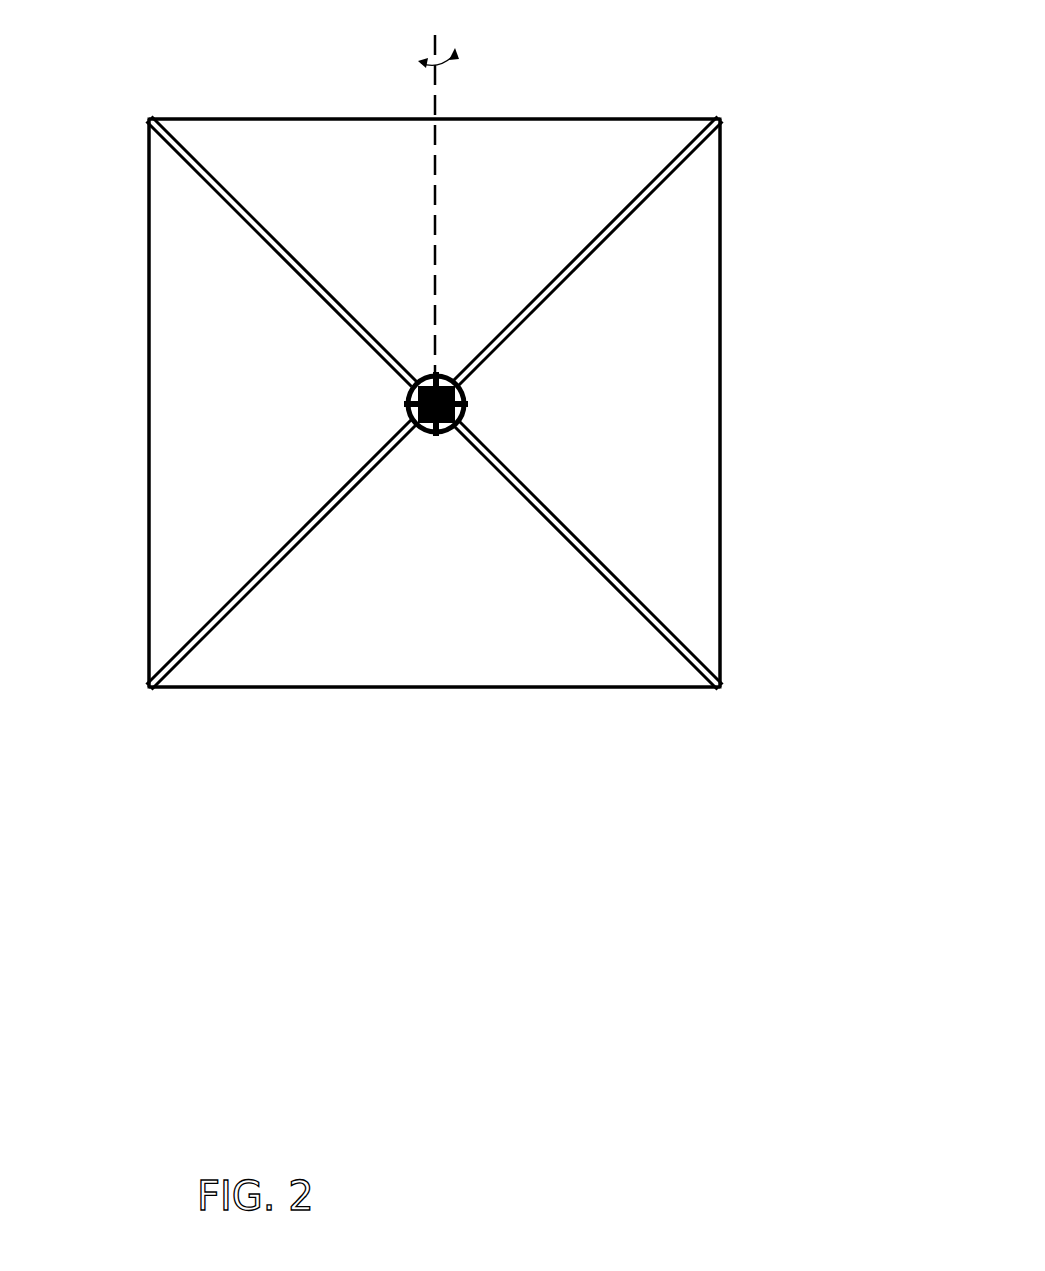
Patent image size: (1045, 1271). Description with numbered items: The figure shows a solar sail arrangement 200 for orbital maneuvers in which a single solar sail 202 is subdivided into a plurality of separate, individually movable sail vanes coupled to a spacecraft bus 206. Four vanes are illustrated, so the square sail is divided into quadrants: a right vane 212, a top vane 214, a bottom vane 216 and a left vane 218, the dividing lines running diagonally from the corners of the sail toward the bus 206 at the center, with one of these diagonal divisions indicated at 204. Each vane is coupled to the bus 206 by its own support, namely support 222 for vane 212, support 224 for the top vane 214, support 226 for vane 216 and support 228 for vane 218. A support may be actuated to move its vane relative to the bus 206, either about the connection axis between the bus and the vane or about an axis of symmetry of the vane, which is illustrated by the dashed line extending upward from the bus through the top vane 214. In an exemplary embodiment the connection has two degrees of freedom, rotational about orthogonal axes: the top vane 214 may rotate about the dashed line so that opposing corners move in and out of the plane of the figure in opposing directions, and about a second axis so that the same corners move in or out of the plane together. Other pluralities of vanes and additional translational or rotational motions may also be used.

The deployable panel assembly 200 is at (491, 414).
The solar sail 202 is at (708, 537).
The lower right support spar 204 is at (642, 598).
The spacecraft bus 206 is at (463, 377).
The sail vane 212 is at (653, 425).
The top vane 214 is at (530, 127).
The sail vane 216 is at (453, 630).
The sail vane 218 is at (217, 320).
The support 222 is at (453, 397).
The support 224 is at (437, 375).
The support 226 is at (437, 430).
The support 228 is at (403, 407).